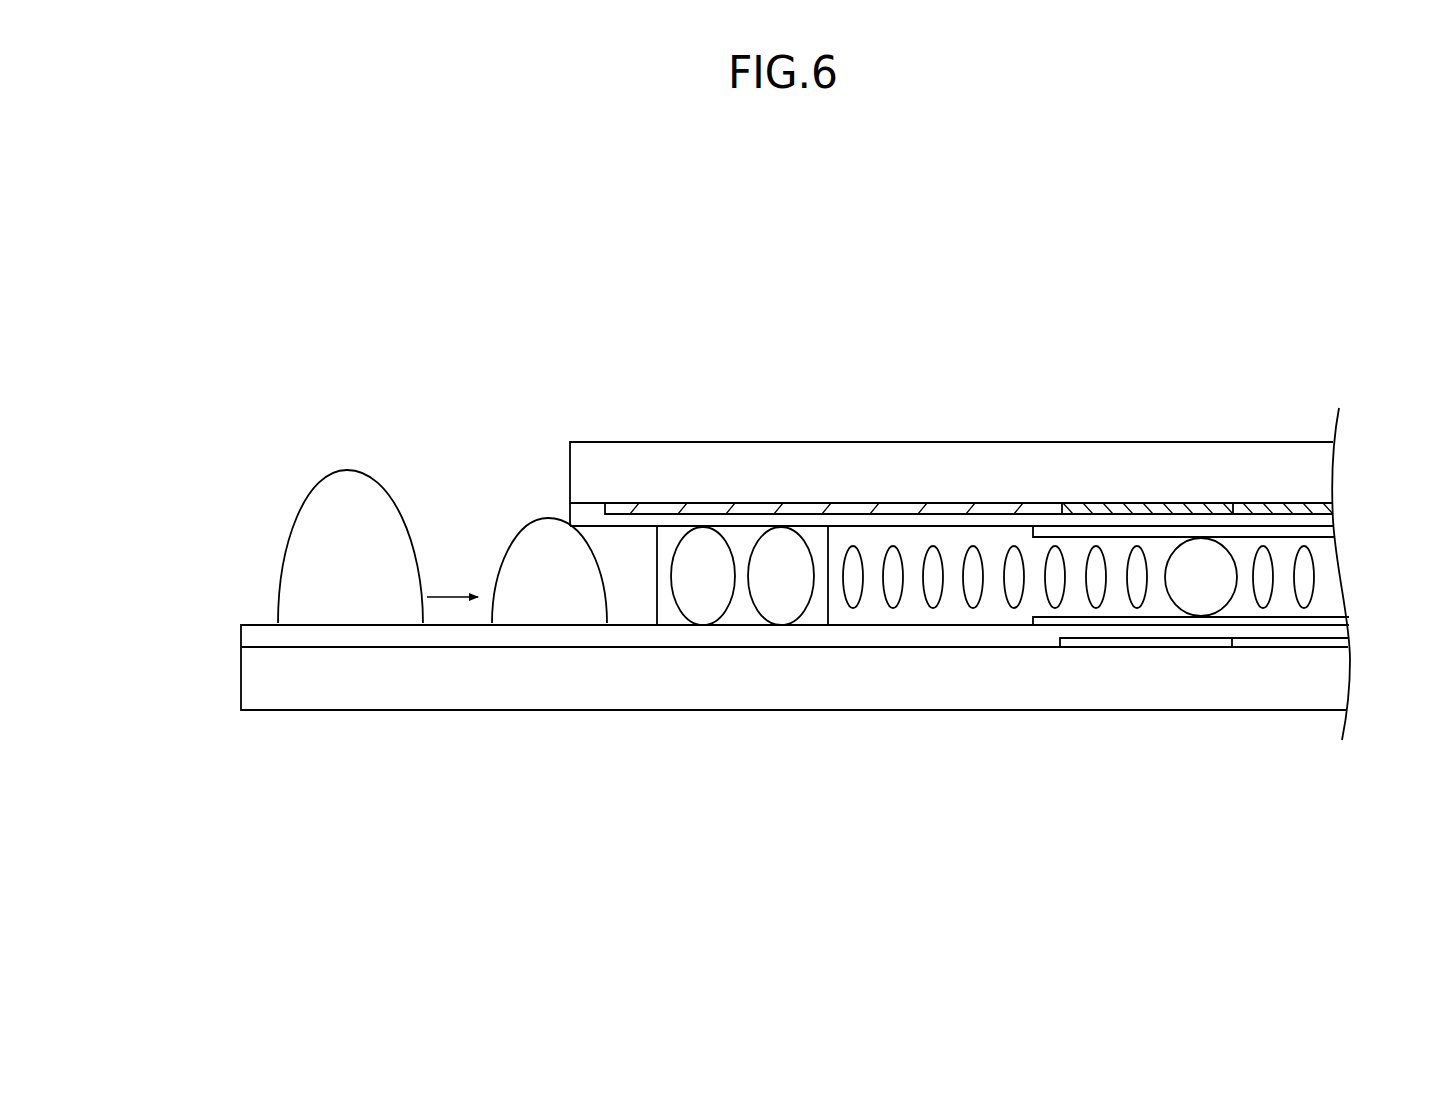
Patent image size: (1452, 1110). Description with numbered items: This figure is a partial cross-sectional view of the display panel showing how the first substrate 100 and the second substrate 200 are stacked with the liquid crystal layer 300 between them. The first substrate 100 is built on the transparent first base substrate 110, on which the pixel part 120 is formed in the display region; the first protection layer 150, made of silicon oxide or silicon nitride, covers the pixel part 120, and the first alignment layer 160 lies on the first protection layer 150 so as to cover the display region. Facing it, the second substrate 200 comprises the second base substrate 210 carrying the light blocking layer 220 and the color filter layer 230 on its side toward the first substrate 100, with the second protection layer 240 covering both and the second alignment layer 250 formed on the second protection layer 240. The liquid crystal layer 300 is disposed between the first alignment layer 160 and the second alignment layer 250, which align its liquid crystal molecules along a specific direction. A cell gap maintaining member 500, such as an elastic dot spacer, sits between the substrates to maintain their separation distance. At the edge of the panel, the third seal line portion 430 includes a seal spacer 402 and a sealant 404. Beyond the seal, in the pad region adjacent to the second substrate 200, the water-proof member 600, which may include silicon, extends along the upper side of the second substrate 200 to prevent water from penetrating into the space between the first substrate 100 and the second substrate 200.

The first substrate 100 is at (233, 665).
The first base substrate 110 is at (988, 685).
The pixel part 120 is at (1113, 647).
The first protection layer 150 is at (695, 638).
The first alignment layer 160 is at (1195, 623).
The second substrate 200 is at (553, 476).
The second base substrate 210 is at (872, 468).
The light blocking layer 220 is at (961, 508).
The color filter layer 230 is at (1119, 509).
The second protection layer 240 is at (1198, 522).
The second alignment layer 250 is at (1271, 530).
The liquid crystal layer 300 is at (1322, 577).
The seal spacer 402 is at (703, 542).
The sealant 404 is at (741, 538).
The third seal line portion 430 is at (742, 474).
The cell gap maintaining member 500 is at (1215, 598).
The water-proof member 600 is at (547, 602).